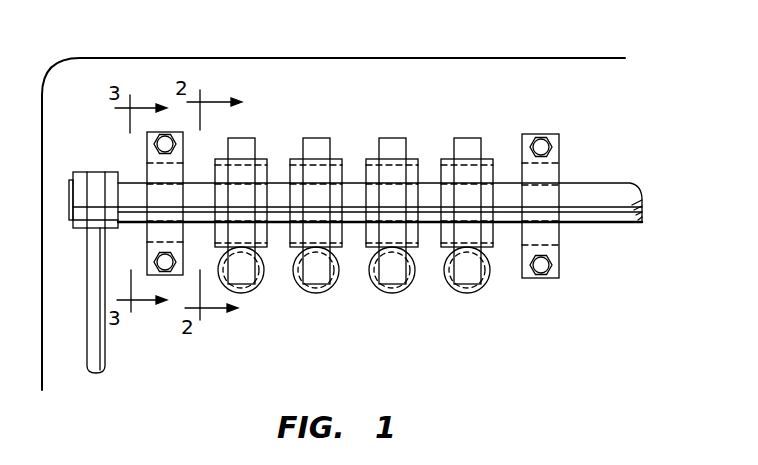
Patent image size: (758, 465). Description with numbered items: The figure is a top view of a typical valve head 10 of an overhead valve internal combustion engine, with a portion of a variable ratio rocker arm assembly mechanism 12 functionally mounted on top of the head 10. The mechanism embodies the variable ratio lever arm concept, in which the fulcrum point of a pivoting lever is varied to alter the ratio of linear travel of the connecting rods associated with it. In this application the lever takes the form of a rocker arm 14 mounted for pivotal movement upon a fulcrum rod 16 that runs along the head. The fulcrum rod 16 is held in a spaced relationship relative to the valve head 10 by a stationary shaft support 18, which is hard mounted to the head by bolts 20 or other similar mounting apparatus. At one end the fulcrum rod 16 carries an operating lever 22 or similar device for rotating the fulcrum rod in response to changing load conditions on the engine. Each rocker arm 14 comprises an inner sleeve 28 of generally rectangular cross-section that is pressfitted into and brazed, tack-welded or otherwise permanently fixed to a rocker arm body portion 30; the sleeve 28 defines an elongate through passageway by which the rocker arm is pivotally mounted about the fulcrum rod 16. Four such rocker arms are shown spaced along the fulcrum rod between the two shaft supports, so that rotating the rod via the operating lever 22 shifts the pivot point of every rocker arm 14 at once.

The valve head 10 is at (293, 62).
The variable ratio rocker arm assembly mechanism 12 is at (356, 236).
The rocker arm 14 is at (362, 150).
The fulcrum rod 16 is at (597, 190).
The stationary shaft support 18 is at (155, 228).
The bolts 20 is at (160, 143).
The operating lever 22 is at (107, 348).
The inner sleeve 28 is at (263, 283).
The rocker arm body portion 30 is at (237, 232).